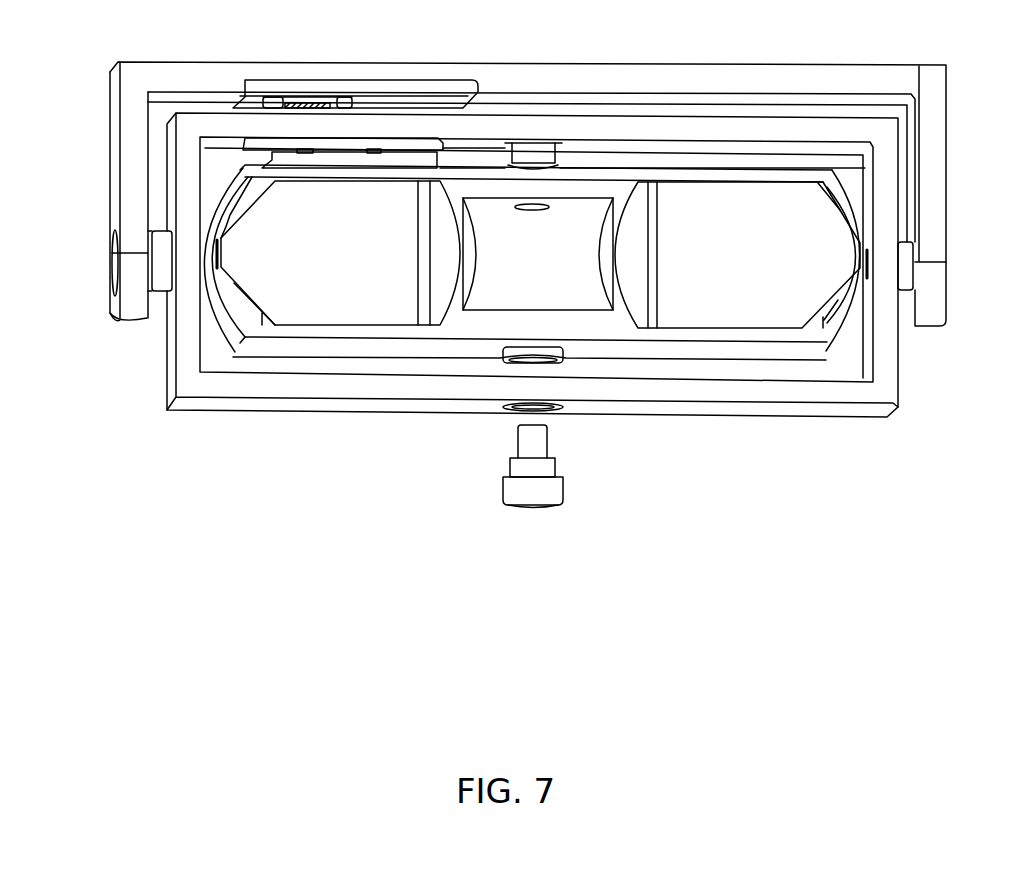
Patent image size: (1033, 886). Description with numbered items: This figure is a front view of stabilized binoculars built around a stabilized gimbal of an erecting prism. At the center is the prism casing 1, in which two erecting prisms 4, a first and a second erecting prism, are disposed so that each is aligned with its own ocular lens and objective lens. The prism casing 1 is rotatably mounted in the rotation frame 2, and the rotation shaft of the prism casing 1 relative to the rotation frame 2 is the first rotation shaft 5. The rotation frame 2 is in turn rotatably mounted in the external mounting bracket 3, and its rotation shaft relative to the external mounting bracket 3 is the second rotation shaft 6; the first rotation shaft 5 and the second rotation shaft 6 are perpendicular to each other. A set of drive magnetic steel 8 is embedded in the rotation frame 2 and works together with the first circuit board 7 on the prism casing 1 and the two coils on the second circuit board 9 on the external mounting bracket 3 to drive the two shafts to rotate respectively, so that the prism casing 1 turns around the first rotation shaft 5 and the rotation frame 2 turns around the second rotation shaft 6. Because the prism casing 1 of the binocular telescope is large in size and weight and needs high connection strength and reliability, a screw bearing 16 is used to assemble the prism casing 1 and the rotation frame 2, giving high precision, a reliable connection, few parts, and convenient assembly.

The prism casing 1 is at (253, 348).
The rotation frame 2 is at (167, 356).
The external mounting bracket 3 is at (132, 220).
The erecting prism 4 is at (382, 307).
The first rotation shaft 5 is at (533, 153).
The second rotation shaft 6 is at (132, 267).
The first circuit board 7 is at (273, 165).
The drive magnetic steel 8 is at (290, 82).
The second circuit board 9 is at (265, 137).
The screw bearing 16 is at (510, 460).